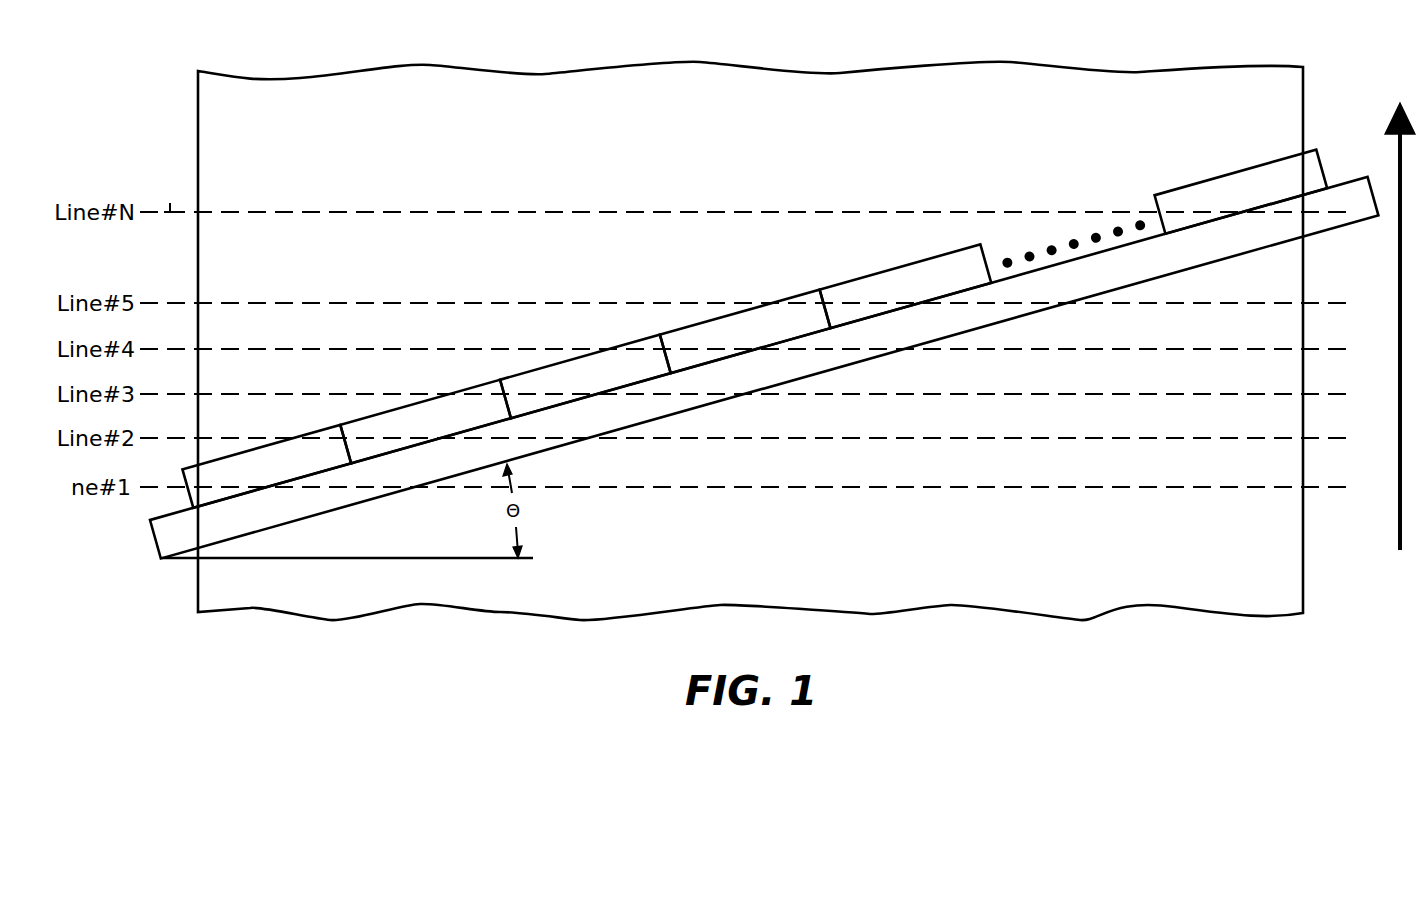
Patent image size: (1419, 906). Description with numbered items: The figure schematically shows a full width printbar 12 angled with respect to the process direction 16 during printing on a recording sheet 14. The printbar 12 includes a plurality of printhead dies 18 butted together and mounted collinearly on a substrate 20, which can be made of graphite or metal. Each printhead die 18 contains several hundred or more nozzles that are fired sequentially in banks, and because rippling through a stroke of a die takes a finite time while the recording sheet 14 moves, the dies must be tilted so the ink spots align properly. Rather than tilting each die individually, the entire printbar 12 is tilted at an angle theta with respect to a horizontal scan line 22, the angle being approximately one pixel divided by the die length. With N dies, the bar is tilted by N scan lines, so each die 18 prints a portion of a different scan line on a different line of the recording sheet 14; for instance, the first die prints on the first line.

The printbar 12 is at (281, 536).
The recording sheet 14 is at (268, 100).
The process direction 16 is at (1398, 258).
The printhead die 18 is at (1258, 185).
The substrate 20 is at (173, 537).
The horizontal scan line 22 is at (171, 195).